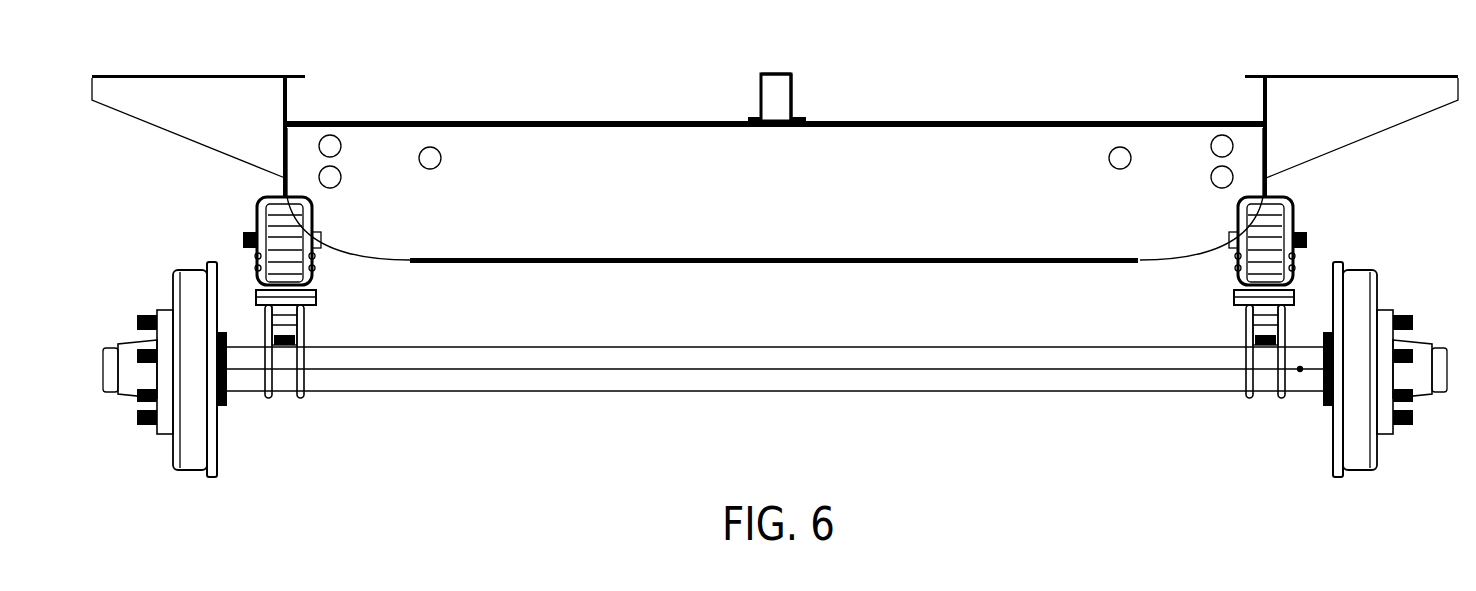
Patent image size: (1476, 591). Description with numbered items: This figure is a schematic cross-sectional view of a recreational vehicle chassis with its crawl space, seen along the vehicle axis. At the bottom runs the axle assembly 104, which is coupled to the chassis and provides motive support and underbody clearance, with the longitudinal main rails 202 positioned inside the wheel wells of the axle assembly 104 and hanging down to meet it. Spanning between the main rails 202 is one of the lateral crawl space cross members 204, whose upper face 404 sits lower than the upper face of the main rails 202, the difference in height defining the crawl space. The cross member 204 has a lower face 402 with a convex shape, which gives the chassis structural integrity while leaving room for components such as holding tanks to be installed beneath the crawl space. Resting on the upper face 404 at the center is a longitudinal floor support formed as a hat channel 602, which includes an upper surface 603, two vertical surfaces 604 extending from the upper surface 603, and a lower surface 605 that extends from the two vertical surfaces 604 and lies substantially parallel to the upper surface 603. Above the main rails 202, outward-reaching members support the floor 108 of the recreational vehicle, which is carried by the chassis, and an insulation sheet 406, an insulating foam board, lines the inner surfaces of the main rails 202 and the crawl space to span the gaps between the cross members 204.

The axle assembly 104 is at (163, 290).
The floor 108 is at (1353, 88).
The longitudinal main rails 202 is at (287, 100).
The lateral crawl space cross members 204 is at (948, 132).
The lower face 402 is at (505, 265).
The upper face 404 is at (610, 130).
The insulation sheet 406 is at (272, 80).
The hat channel 602 is at (788, 67).
The upper surface 603 is at (777, 73).
The vertical surfaces 604 is at (795, 92).
The lower surface 605 is at (805, 118).